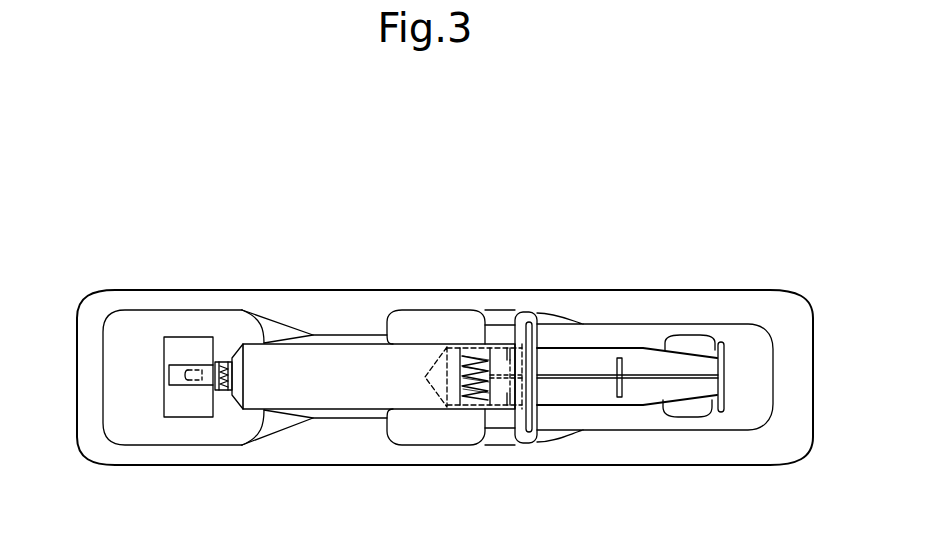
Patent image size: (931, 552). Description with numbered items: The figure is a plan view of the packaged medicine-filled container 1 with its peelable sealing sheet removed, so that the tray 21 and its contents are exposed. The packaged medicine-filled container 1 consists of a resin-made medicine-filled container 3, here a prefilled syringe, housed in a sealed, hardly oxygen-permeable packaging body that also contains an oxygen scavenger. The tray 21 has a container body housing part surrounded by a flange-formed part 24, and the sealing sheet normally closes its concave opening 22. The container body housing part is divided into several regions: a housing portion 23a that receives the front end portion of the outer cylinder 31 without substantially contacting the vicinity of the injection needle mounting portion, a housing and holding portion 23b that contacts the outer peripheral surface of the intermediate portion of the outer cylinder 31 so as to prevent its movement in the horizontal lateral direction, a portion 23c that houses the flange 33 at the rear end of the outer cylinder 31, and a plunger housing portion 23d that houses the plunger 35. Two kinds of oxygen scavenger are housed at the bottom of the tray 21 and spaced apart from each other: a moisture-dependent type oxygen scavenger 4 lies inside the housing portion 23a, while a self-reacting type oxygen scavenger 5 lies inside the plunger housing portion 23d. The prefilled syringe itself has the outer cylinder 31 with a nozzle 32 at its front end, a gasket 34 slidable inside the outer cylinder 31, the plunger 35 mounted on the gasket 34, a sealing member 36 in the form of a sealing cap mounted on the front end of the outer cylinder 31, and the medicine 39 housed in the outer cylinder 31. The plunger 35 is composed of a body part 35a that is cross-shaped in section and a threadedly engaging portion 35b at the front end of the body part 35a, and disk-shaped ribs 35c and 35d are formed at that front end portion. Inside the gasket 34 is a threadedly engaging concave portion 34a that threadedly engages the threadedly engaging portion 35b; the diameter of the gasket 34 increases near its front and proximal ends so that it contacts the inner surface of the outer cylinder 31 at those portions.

The packaged medicine-filled container 1 is at (252, 256).
The medicine-filled container 3 is at (323, 396).
The moisture-dependent type oxygen scavenger 4 is at (178, 417).
The self-reacting type oxygen scavenger 5 is at (697, 347).
The tray 21 is at (625, 293).
The concave opening 22 is at (403, 311).
The housing portion 23a is at (130, 407).
The housing and holding portion 23b is at (440, 325).
The portion for housing a flange-formed part 23c is at (535, 437).
The plunger housing portion 23d is at (707, 417).
The flange-formed part 24 is at (623, 447).
The outer cylinder 31 is at (350, 348).
The nozzle 32 is at (188, 362).
The flange 33 is at (541, 330).
The gasket 34 is at (433, 395).
The threadedly engaging concave portion 34a is at (458, 402).
The plunger 35 is at (645, 403).
The body part 35a is at (595, 350).
The threadedly engaging portion 35b is at (475, 410).
The disk-shaped rib 35c is at (488, 345).
The disk-shaped rib 35d is at (521, 321).
The sealing member 36 is at (206, 392).
The medicine 39 is at (353, 392).